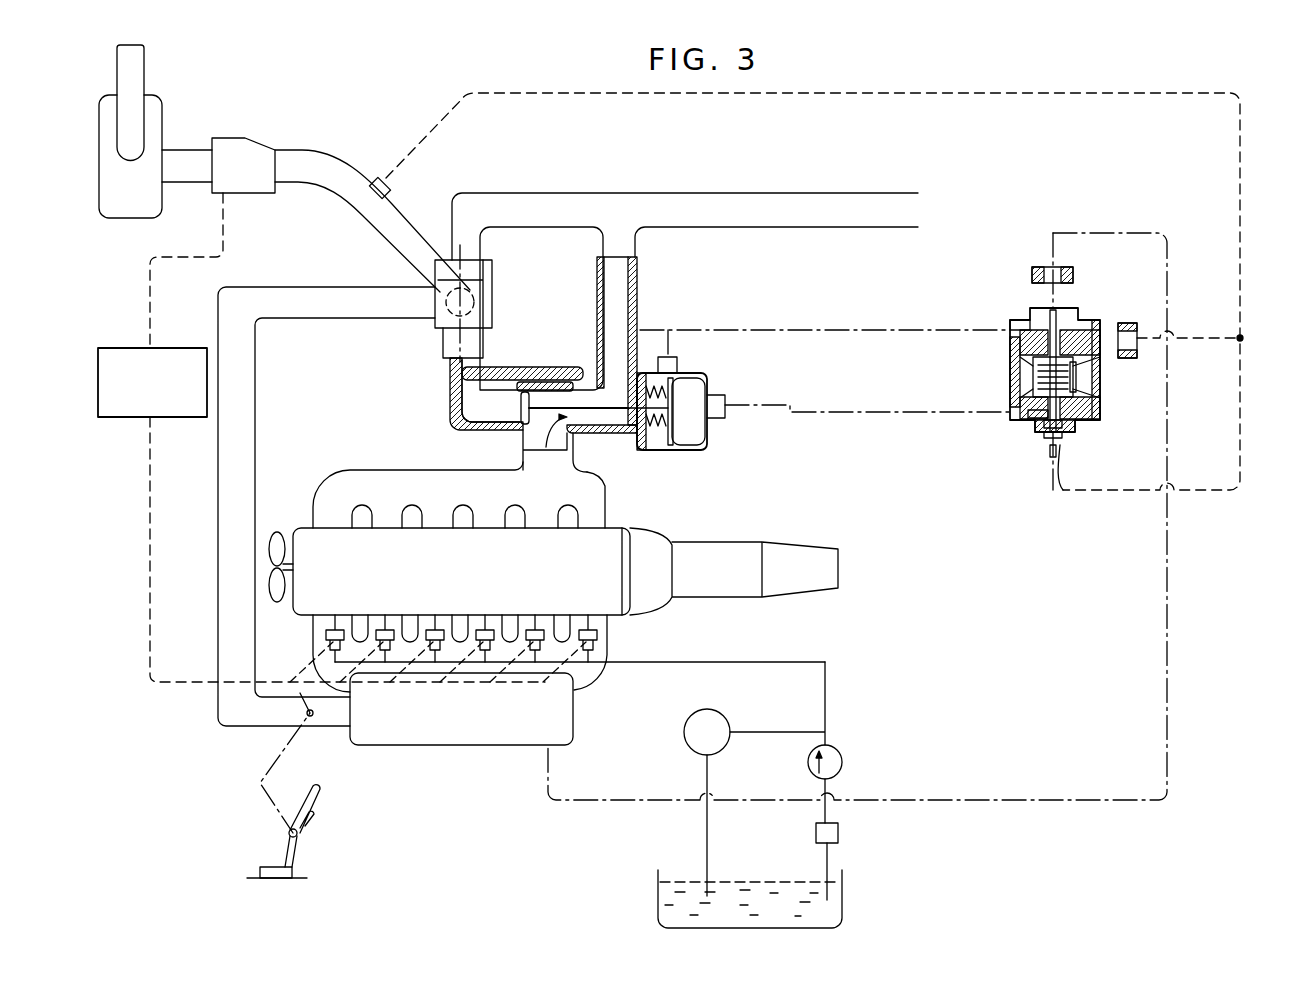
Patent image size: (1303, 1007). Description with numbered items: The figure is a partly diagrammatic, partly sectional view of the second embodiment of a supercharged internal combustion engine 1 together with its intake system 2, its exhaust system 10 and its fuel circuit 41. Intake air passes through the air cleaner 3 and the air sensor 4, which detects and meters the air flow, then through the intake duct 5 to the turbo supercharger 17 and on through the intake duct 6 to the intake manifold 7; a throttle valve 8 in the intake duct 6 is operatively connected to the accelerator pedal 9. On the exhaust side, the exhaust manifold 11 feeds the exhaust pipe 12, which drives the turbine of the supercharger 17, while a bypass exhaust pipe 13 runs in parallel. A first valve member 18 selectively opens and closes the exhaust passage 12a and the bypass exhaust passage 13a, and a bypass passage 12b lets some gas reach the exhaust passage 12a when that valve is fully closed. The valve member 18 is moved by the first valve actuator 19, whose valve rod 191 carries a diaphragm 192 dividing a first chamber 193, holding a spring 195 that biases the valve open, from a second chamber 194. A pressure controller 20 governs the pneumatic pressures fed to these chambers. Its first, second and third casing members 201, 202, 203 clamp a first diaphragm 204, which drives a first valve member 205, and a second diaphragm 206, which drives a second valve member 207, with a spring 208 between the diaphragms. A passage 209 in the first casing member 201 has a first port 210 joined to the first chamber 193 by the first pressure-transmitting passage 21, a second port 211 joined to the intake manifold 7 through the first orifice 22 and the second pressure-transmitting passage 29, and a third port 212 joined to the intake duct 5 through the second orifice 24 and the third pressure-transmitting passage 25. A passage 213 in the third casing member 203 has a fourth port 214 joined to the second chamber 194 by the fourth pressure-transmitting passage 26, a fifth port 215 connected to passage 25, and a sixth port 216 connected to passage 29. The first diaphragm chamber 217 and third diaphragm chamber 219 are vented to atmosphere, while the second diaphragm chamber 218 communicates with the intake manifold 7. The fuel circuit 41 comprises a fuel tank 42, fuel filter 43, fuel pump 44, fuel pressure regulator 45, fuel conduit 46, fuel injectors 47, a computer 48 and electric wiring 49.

The supercharged internal combustion engine 1 is at (640, 543).
The intake system 2 is at (580, 692).
The air cleaner 3 is at (145, 72).
The air sensor 4 is at (237, 145).
The intake duct 5 is at (336, 162).
The intake duct 6 is at (254, 419).
The intake manifold 7 is at (455, 745).
The throttle valve 8 is at (307, 715).
The accelerator pedal 9 is at (301, 849).
The exhaust system 10 is at (456, 460).
The exhaust manifold 11 is at (606, 506).
The exhaust pipe 12 is at (450, 385).
The exhaust passage 12a is at (465, 408).
The bypass passage 12b is at (540, 369).
The bypass exhaust pipe 13 is at (637, 278).
The bypass exhaust passage 13a is at (566, 443).
The turbo supercharger 17 is at (492, 287).
The first valve member 18 is at (521, 410).
The first valve actuator 19 is at (663, 451).
The valve rod 191 is at (572, 382).
The diaphragm 192 is at (704, 450).
The first chamber 193 is at (642, 429).
The second chamber 194 is at (698, 380).
The spring 195 is at (643, 375).
The pressure controller 20 is at (996, 314).
The first casing member 201 is at (1115, 329).
The second casing member 202 is at (1010, 372).
The third casing member 203 is at (1076, 432).
The first diaphragm 204 is at (1016, 362).
The first valve member 205 is at (1072, 320).
The second diaphragm 206 is at (1018, 388).
The second valve member 207 is at (1051, 445).
The spring 208 is at (1042, 428).
The passage 209 is at (1031, 317).
The first port 210 is at (1010, 326).
The second port 211 is at (1057, 316).
The third port 212 is at (1100, 355).
The passage 213 is at (1045, 450).
The fourth port 214 is at (1016, 410).
The fifth port 215 is at (1062, 482).
The sixth port 216 is at (1100, 403).
The first diaphragm chamber 217 is at (1020, 358).
The second diaphragm chamber 218 is at (1078, 384).
The third diaphragm chamber 219 is at (1083, 385).
The first pressure-transmitting passage 21 is at (849, 330).
The first orifice 22 is at (1035, 269).
The second orifice 24 is at (1128, 323).
The third pressure-transmitting passage 25 is at (1244, 336).
The fourth pressure-transmitting passage 26 is at (792, 416).
The second pressure-transmitting passage 29 is at (1170, 600).
The fuel circuit 41 is at (836, 679).
The fuel tank 42 is at (842, 896).
The fuel filter 43 is at (840, 833).
The fuel pump 44 is at (841, 751).
The fuel pressure regulator 45 is at (689, 721).
The fuel conduit 46 is at (735, 662).
The fuel injectors 47 is at (600, 634).
The computer 48 is at (98, 380).
The electric wiring 49 is at (148, 548).